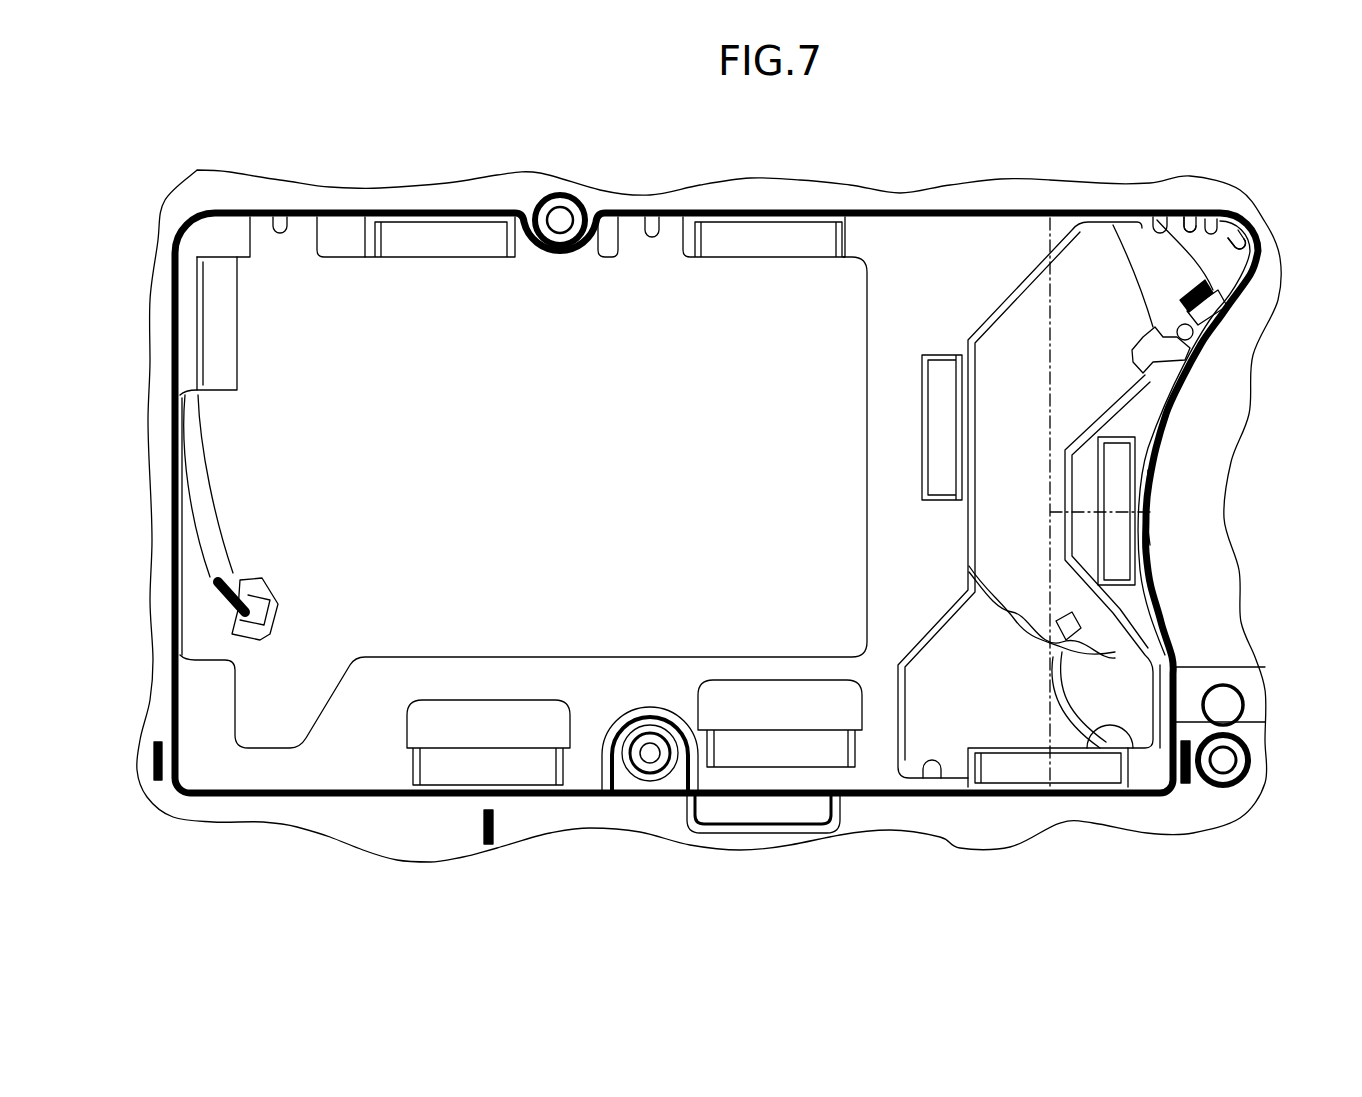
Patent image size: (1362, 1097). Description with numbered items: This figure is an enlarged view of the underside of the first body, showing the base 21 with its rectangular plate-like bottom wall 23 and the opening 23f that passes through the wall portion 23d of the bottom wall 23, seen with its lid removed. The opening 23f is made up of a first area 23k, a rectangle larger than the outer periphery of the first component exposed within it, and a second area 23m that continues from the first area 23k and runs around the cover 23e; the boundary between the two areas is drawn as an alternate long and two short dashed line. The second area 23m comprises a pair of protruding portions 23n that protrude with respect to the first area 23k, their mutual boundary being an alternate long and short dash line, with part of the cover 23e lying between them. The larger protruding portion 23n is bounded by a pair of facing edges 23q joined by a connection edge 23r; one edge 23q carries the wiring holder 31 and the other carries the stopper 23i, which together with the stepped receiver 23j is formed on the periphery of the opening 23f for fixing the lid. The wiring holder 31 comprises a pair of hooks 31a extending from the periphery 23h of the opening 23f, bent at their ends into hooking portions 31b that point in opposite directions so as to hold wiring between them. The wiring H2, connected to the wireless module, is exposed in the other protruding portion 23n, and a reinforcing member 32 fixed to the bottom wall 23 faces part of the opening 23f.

The base 21 is at (373, 835).
The bottom wall 23 is at (525, 823).
The wall portion 23d is at (1200, 533).
The cover 23e is at (1200, 483).
The opening 23f is at (190, 595).
The periphery 23h is at (190, 528).
The stopper 23i is at (280, 230).
The receiver 23j is at (343, 237).
The first area 23k is at (277, 440).
The second area 23m is at (1082, 285).
The protruding portions 23n is at (1135, 380).
The edges 23q is at (1200, 215).
The connection edge 23r is at (1240, 250).
The wiring holder 31 is at (1222, 285).
The hooks 31a is at (1140, 330).
The hooking portions 31b is at (1217, 283).
The reinforcing member 32 is at (895, 300).
The wiring H2 is at (1140, 745).